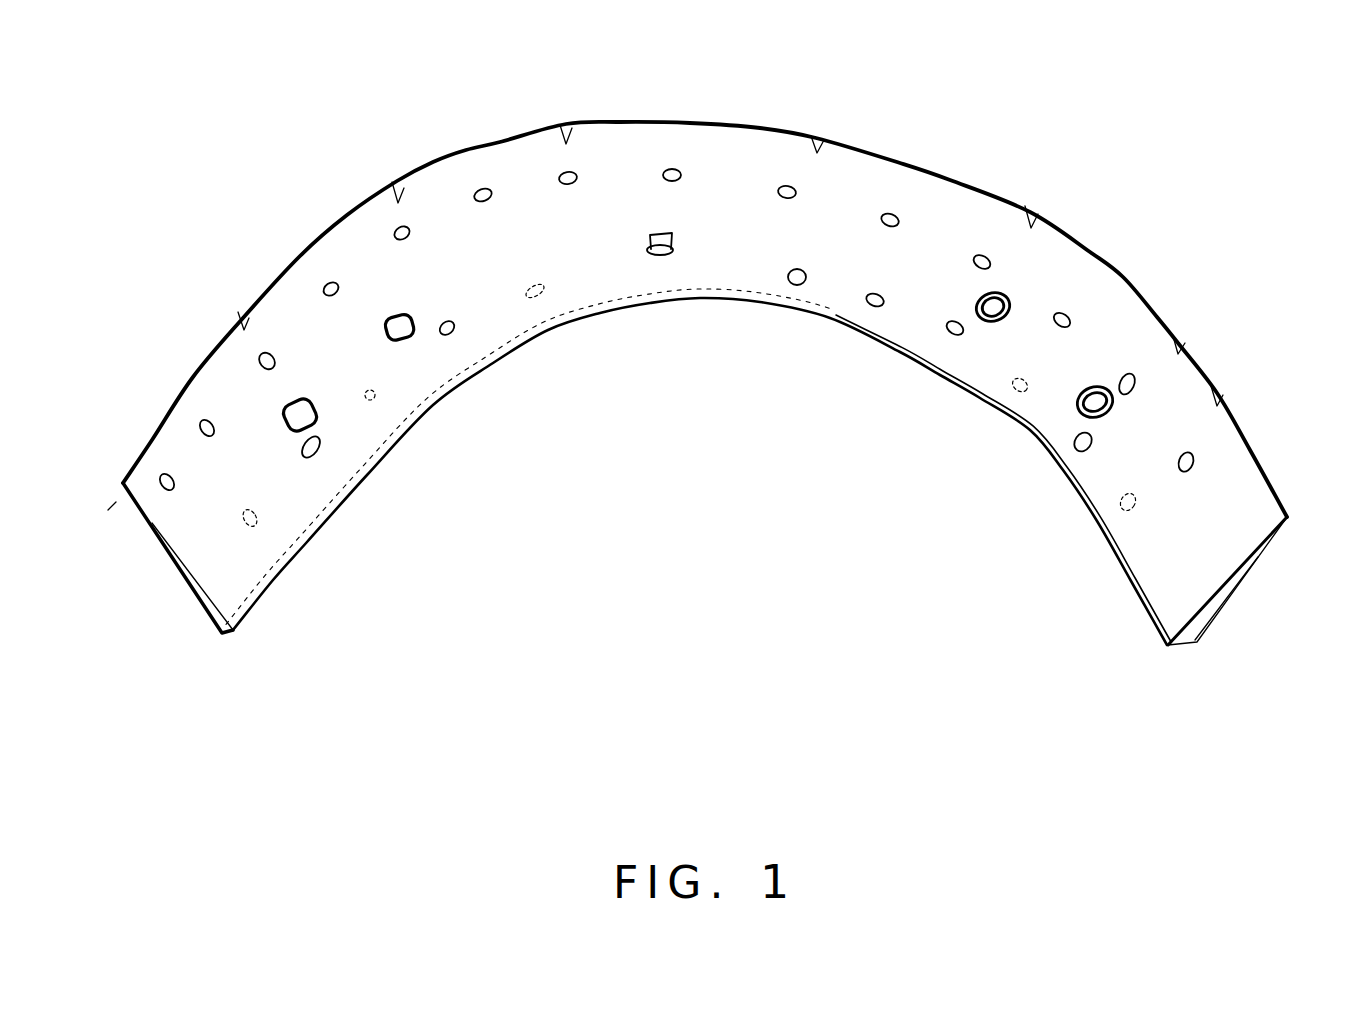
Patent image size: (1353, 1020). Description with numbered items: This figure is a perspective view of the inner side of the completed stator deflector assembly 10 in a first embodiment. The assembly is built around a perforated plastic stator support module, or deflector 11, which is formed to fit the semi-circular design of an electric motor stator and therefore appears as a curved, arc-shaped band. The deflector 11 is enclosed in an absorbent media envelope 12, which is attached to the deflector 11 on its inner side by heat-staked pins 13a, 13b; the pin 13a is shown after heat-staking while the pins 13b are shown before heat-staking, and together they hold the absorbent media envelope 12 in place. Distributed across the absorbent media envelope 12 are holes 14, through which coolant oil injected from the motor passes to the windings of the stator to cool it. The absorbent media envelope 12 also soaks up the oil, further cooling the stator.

The stator deflector assembly 10 is at (1166, 238).
The stator support module (deflector) 11 is at (576, 322).
The absorbent media envelope 12 is at (1217, 394).
The heat-staked pin (after heat-staking) 13a is at (1008, 297).
The heat-staked pin (before heat-staking) 13b is at (392, 315).
The holes 14 is at (783, 187).